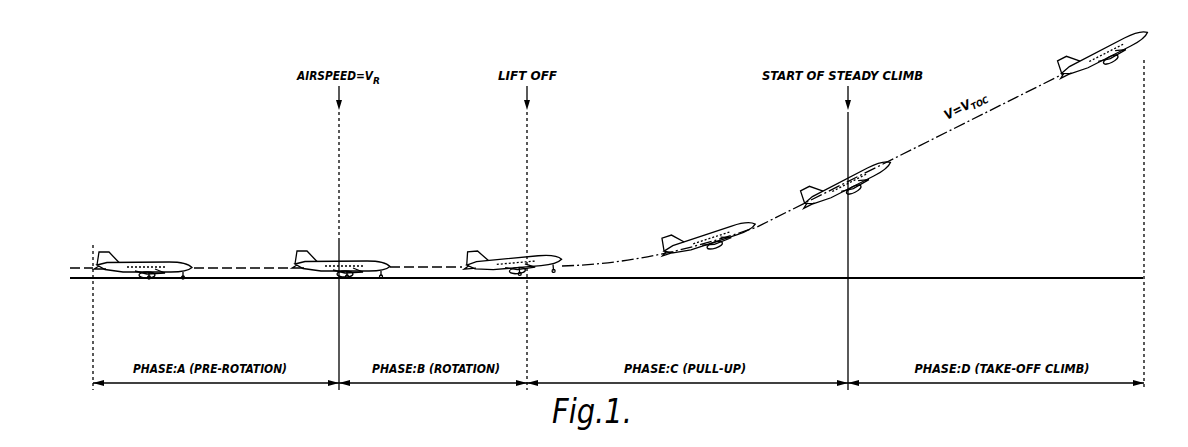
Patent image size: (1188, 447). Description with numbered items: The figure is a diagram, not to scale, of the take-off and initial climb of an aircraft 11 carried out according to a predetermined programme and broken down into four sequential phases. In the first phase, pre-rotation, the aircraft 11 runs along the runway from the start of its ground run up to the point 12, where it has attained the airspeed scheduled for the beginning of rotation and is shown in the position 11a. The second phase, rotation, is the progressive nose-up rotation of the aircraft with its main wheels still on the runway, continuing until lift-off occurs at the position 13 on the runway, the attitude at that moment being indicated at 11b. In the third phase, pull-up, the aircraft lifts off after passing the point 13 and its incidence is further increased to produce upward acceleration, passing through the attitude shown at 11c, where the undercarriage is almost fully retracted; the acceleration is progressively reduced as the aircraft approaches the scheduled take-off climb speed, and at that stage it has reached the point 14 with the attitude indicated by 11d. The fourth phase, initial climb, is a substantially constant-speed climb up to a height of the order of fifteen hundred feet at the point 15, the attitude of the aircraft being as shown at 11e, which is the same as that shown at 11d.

The aircraft 11 is at (178, 262).
The aircraft position at rotation airspeed 11a is at (368, 262).
The aircraft attitude at lift-off 11b is at (555, 260).
The aircraft attitude during pull-up 11c is at (748, 222).
The aircraft attitude at start of steady climb 11d is at (882, 163).
The aircraft attitude in initial climb 11e is at (1105, 66).
The rotation point 12 is at (340, 310).
The lift-off point 13 is at (530, 322).
The start of steady climb point 14 is at (850, 318).
The end of initial climb point 15 is at (1143, 312).